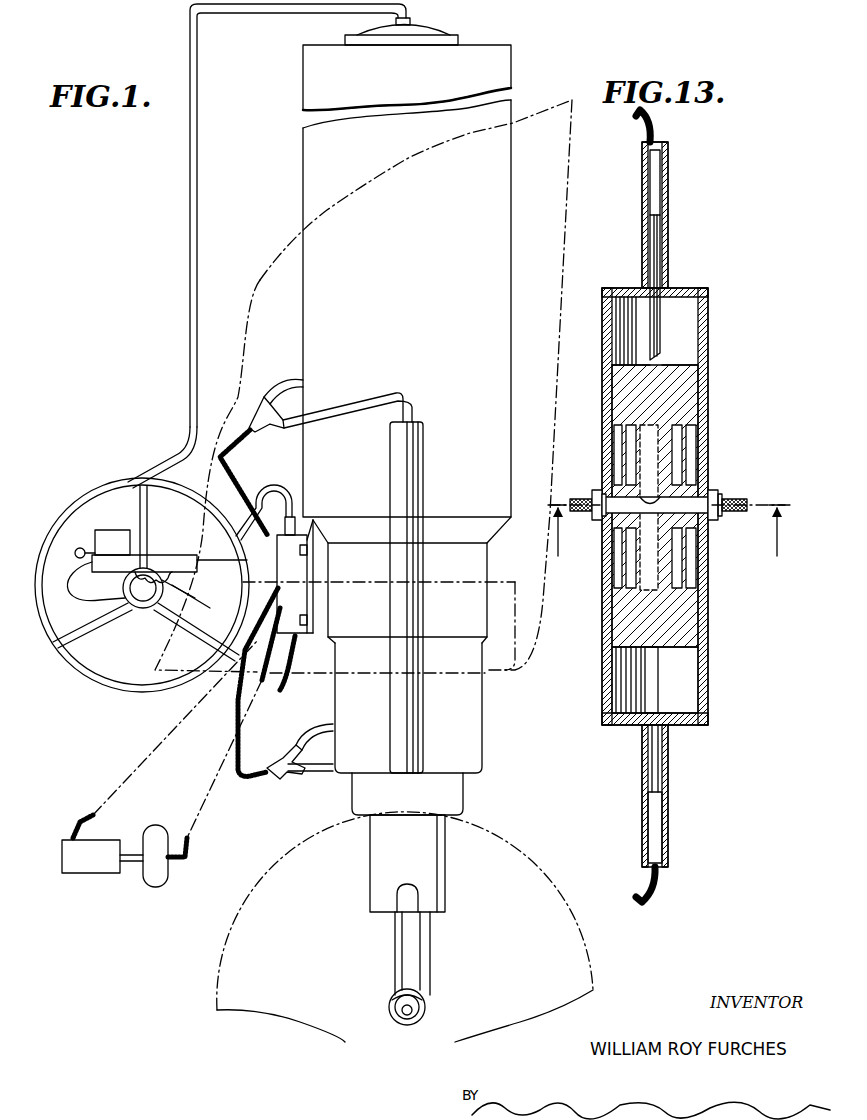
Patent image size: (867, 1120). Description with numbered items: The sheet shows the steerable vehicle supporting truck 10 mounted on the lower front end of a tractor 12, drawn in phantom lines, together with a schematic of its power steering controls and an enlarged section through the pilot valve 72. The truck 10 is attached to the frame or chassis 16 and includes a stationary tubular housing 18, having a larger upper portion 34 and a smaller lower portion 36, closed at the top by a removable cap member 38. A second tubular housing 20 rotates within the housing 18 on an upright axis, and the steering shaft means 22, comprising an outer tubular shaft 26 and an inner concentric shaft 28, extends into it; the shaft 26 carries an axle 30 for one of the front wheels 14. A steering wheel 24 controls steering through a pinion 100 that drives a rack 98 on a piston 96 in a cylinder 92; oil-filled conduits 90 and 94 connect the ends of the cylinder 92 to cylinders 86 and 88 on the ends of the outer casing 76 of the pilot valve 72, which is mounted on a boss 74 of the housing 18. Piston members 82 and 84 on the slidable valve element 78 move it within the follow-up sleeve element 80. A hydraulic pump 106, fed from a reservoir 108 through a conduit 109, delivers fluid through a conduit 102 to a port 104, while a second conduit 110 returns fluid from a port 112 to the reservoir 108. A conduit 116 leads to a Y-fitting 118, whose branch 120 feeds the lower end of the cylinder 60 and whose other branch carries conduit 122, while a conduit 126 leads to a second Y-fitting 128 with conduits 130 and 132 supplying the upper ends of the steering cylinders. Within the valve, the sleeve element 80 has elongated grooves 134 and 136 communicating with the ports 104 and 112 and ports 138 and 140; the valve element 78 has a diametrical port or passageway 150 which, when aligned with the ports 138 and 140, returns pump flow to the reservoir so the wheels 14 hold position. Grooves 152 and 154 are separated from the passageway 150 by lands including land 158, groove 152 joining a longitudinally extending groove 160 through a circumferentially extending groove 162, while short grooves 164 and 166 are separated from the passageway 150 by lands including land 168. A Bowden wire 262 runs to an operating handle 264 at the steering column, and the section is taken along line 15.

In FIG. 1, the steerable vehicle supporting truck 10 is at (490, 678).
In FIG. 1, the tractor 12 is at (573, 181).
In FIG. 1, the front wheels 14 is at (526, 849).
In FIG. 1, the frame or chassis 16 is at (436, 582).
In FIG. 1, the stationary tubular housing 18 is at (512, 211).
In FIG. 1, the second tubular housing 20 is at (466, 800).
In FIG. 1, the steering shaft means 22 is at (448, 870).
In FIG. 1, the steering wheel 24 is at (100, 492).
In FIG. 1, the outer tubular shaft 26 is at (447, 890).
In FIG. 1, the inner concentric shaft 28 is at (432, 955).
In FIG. 1, the axle 30 is at (428, 1003).
In FIG. 1, the upper portion of housing 34 is at (512, 402).
In FIG. 1, the lower portion of housing 36 is at (503, 600).
In FIG. 1, the removable cap member 38 is at (468, 45).
In FIG. 1, the cylinder 60 is at (424, 470).
In FIG. 1, the pilot valve 72 is at (303, 638).
In FIG. 13, the pilot valve 72 is at (714, 374).
In FIG. 1, the boss 74 is at (312, 638).
In FIG. 13, the outer casing 76 is at (708, 700).
In FIG. 13, the slidable valve element 78 is at (672, 658).
In FIG. 13, the follow-up sleeve element 80 is at (699, 362).
In FIG. 13, the piston member 82 is at (662, 318).
In FIG. 13, the piston member 84 is at (668, 770).
In FIG. 13, the cylinder 86 is at (668, 183).
In FIG. 13, the cylinder 88 is at (668, 835).
In FIG. 1, the conduit 90 is at (271, 488).
In FIG. 13, the conduit 90 is at (660, 122).
In FIG. 1, the cylinder 92 is at (183, 555).
In FIG. 1, the conduit 94 is at (142, 622).
In FIG. 13, the conduit 94 is at (660, 893).
In FIG. 1, the piston 96 is at (153, 572).
In FIG. 1, the rack 98 is at (190, 591).
In FIG. 1, the pinion 100 is at (205, 601).
In FIG. 1, the conduit 102 is at (282, 670).
In FIG. 13, the conduit 102 is at (590, 500).
In FIG. 13, the port 104 is at (598, 518).
In FIG. 1, the hydraulic pump 106 is at (170, 866).
In FIG. 1, the reservoir 108 is at (111, 878).
In FIG. 1, the conduit 109 is at (132, 862).
In FIG. 1, the second conduit 110 is at (183, 735).
In FIG. 13, the second conduit 110 is at (736, 498).
In FIG. 13, the port 112 is at (713, 492).
In FIG. 1, the conduit 116 is at (248, 790).
In FIG. 1, the Y-fitting 118 is at (288, 782).
In FIG. 1, the branch of Y-fitting 120 is at (368, 764).
In FIG. 1, the conduit 122 is at (318, 740).
In FIG. 1, the conduit 126 is at (232, 428).
In FIG. 1, the second Y-fitting 128 is at (262, 397).
In FIG. 1, the conduit 130 is at (341, 407).
In FIG. 1, the conduit 132 is at (292, 380).
In FIG. 13, the elongated groove 134 is at (614, 430).
In FIG. 13, the elongated groove 136 is at (700, 596).
In FIG. 13, the port 138 is at (612, 534).
In FIG. 13, the port 140 is at (718, 521).
In FIG. 13, the port or passageway 150 is at (717, 480).
In FIG. 13, the groove 152 is at (626, 598).
In FIG. 13, the groove 154 is at (626, 440).
In FIG. 13, the land 158 is at (622, 486).
In FIG. 13, the longitudinally extending groove 160 is at (692, 600).
In FIG. 13, the circumferentially extending groove 162 is at (626, 604).
In FIG. 13, the short longitudinally extending groove 164 is at (692, 586).
In FIG. 13, the short longitudinally extending groove 166 is at (690, 426).
In FIG. 13, the land 168 is at (700, 533).
In FIG. 13, the section line 15- 15 is at (669, 540).
In FIG. 1, the Bowden wire 262 is at (297, 13).
In FIG. 1, the operating handle 264 is at (92, 535).